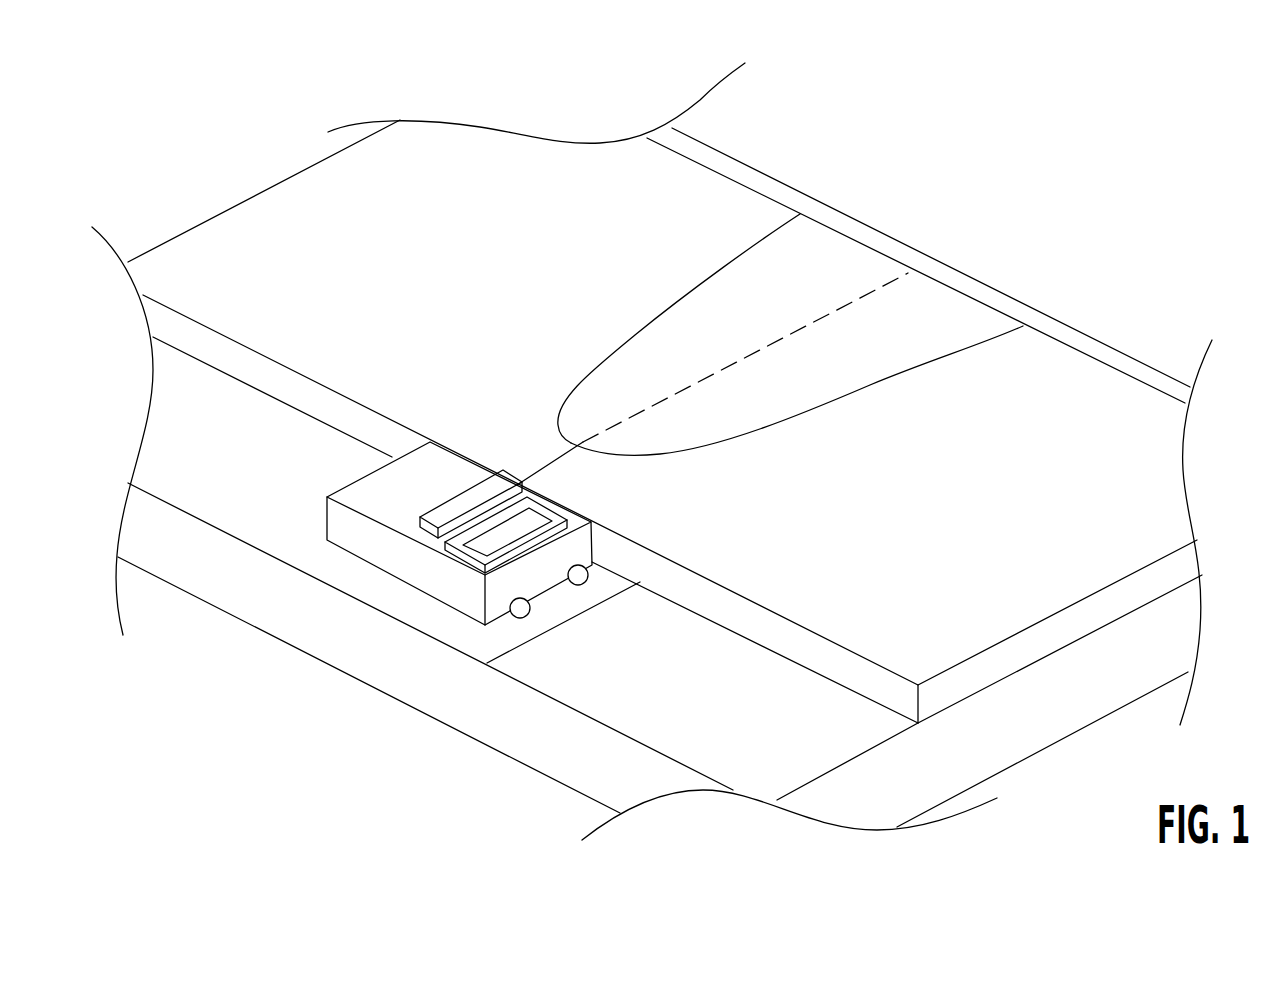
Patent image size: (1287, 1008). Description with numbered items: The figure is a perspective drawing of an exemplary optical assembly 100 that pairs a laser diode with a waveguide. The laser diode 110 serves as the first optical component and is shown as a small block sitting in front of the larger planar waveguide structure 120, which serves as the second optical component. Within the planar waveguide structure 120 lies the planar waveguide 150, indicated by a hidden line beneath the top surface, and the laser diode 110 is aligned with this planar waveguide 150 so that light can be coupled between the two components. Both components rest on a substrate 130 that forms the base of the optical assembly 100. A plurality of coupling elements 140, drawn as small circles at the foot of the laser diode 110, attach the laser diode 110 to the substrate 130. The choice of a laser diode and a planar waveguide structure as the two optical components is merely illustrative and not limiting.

The optical assembly 100 is at (180, 146).
The laser diode 110 is at (383, 492).
The planar waveguide structure 120 is at (1062, 377).
The substrate 130 is at (257, 597).
The coupling elements 140 is at (578, 585).
The planar waveguide 150 is at (777, 225).